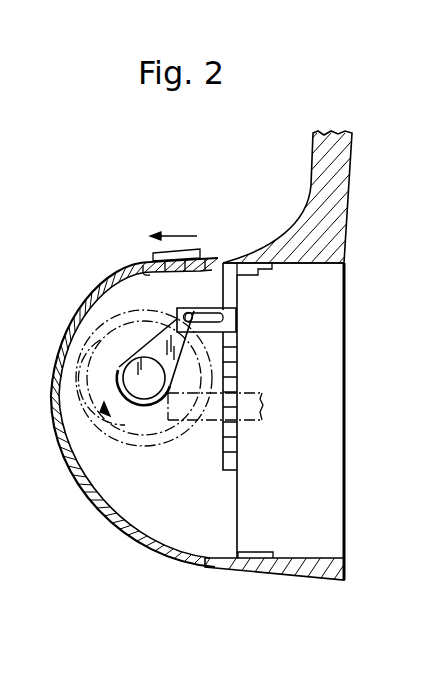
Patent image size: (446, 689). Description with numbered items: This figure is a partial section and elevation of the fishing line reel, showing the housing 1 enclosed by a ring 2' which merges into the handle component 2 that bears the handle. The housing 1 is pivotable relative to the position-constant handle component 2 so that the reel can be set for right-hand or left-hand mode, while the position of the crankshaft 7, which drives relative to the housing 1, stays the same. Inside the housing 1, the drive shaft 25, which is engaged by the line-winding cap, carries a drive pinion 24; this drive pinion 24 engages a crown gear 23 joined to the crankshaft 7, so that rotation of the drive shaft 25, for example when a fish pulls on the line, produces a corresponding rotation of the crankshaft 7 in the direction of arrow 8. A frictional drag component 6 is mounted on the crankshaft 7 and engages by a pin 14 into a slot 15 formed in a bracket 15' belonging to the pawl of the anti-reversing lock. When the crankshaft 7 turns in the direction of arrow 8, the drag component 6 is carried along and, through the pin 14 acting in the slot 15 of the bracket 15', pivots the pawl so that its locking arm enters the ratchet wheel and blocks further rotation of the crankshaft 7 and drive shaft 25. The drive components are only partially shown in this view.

The housing 1 is at (86, 297).
The handle component 2 is at (317, 345).
The ring 2' is at (281, 595).
The frictional drag component 6 is at (172, 402).
The crankshaft 7 is at (137, 398).
The arrow 8 is at (97, 393).
The pin 14 is at (189, 314).
The slot 15 is at (228, 233).
The bracket 15' is at (248, 319).
The crown gear 23 is at (142, 440).
The drive pinion 24 is at (201, 422).
The drive shaft 25 is at (250, 400).